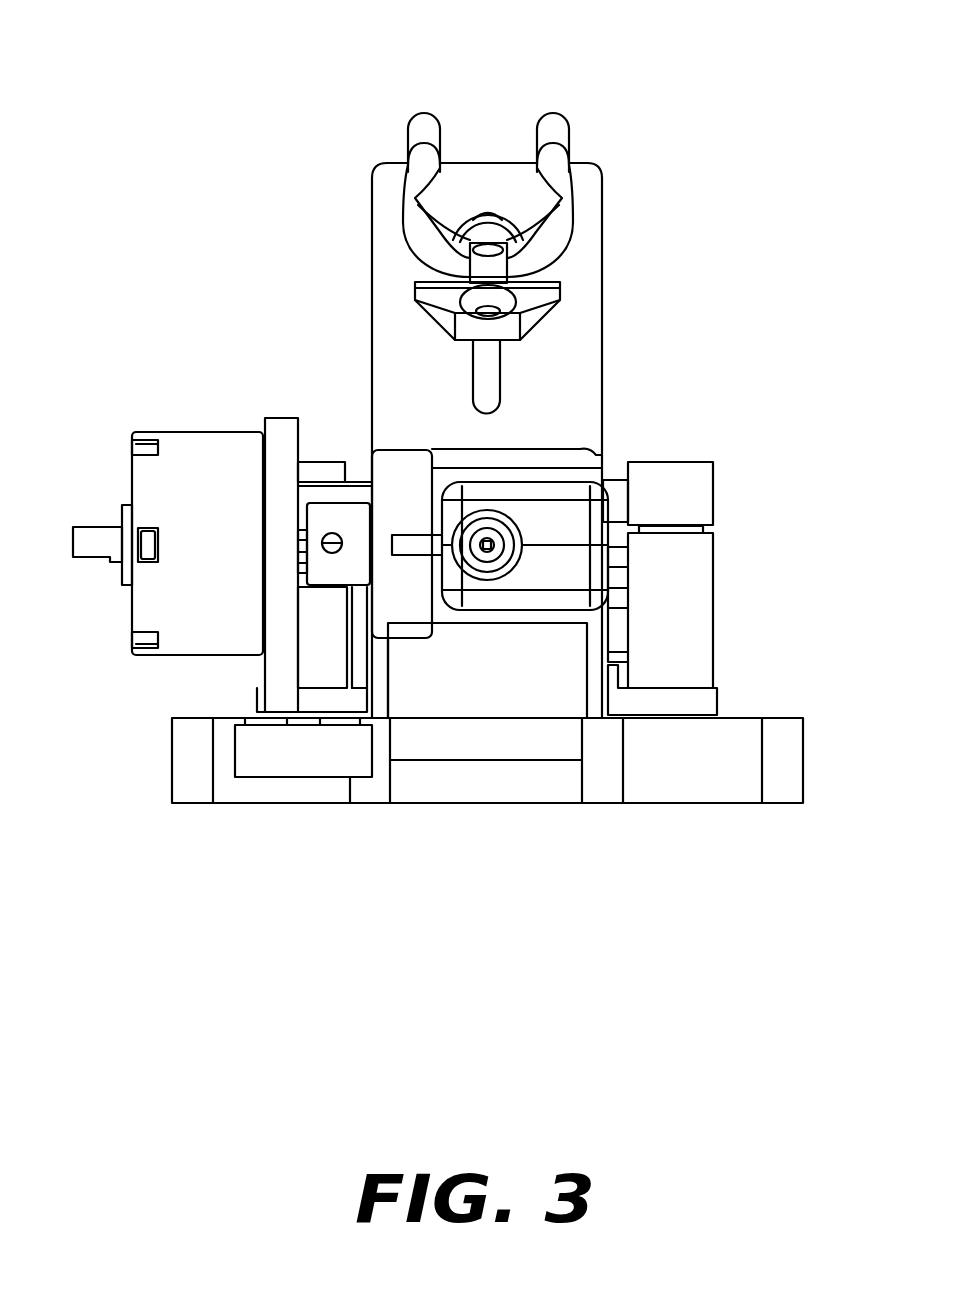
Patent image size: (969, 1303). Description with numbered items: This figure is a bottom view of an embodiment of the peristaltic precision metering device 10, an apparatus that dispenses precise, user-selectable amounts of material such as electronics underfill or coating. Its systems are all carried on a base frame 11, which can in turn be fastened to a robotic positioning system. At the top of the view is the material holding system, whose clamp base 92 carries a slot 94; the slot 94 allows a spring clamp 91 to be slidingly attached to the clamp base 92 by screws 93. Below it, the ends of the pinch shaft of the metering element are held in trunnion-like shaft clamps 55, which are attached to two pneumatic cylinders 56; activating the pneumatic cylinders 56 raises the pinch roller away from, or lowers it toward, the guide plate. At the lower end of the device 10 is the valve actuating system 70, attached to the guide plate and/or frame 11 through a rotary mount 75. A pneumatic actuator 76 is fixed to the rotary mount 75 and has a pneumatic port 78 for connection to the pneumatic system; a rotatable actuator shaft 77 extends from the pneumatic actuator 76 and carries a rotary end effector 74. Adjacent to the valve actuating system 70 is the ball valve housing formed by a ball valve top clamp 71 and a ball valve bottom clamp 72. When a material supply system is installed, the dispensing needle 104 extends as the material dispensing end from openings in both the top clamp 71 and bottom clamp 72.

The peristaltic precision metering device 10 is at (195, 71).
The base frame 11 is at (785, 765).
The shaft clamps 55 is at (325, 476).
The pneumatic cylinders 56 is at (320, 638).
The valve actuating system 70 is at (240, 677).
The ball valve top clamp 71 is at (541, 490).
The ball valve bottom clamp 72 is at (541, 598).
The rotary end effector 74 is at (405, 466).
The rotary mount 75 is at (278, 430).
The pneumatic actuator 76 is at (185, 448).
The rotatable actuator shaft 77 is at (300, 538).
The pneumatic port 78 is at (90, 535).
The spring clamp 91 is at (555, 118).
The clamp base 92 is at (383, 200).
The screws 93 is at (487, 230).
The slot 94 is at (480, 353).
The dispensing needle 104 is at (487, 550).